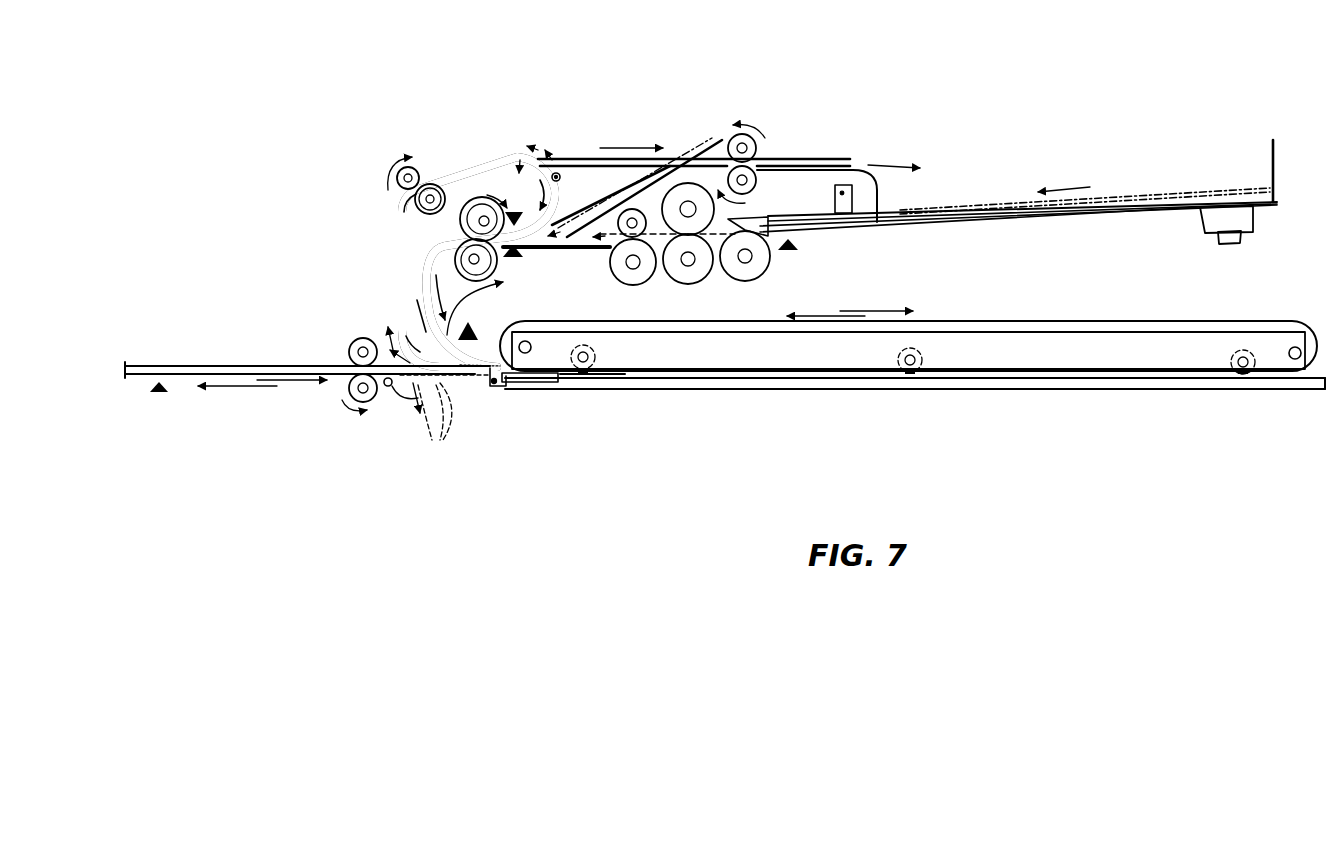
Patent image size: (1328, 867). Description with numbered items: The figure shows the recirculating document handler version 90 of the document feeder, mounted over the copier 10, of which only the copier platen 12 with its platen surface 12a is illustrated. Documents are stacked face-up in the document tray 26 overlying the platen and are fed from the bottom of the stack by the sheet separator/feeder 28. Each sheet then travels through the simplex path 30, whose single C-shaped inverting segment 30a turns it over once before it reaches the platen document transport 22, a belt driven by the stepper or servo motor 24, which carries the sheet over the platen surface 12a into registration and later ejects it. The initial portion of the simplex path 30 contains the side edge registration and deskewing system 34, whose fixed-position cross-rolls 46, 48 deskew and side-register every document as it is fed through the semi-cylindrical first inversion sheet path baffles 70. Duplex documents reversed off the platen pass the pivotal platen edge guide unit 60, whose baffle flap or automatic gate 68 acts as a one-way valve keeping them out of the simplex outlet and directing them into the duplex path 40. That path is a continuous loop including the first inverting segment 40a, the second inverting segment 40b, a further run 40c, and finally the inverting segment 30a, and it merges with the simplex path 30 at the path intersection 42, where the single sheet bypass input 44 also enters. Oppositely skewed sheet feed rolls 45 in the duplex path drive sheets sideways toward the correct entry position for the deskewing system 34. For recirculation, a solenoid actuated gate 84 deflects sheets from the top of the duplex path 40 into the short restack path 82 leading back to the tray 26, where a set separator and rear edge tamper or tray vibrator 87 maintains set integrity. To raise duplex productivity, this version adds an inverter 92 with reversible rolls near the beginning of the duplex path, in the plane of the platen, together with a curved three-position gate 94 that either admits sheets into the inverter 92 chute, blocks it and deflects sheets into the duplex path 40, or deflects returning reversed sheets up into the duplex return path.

The copier 10 is at (1050, 455).
The copier platen 12 is at (710, 384).
The platen surface 12a is at (623, 379).
The platen document transport 22 is at (755, 298).
The stepper or servo motor 24 is at (1293, 359).
The document tray 26 is at (1015, 222).
The sheet separator/feeder 28 is at (735, 213).
The simplex path 30 is at (423, 296).
The inverting segment 30a is at (400, 332).
The side edge registration and deskewing system 34 is at (400, 208).
The duplex path 40 is at (398, 260).
The first inverting segment 40a is at (447, 233).
The second inverting segment 40b is at (572, 172).
The belt curved run 40c is at (425, 318).
The path intersection 42 is at (533, 243).
The single sheet bypass input 44 is at (712, 140).
The sheet feed rolls 45 is at (435, 163).
The cross-roll 46 is at (482, 212).
The cross-roll 48 is at (492, 262).
The pivotal platen edge guide unit 60 is at (522, 383).
The baffle flap or automatic gate 68 is at (492, 378).
The first inversion sheet path baffles 70 is at (440, 274).
The restack path 82 is at (628, 158).
The solenoid actuated gate 84 is at (562, 173).
The set separator and rear edge tamper and/or tray vibrator 87 is at (1225, 236).
The RDH version 90 is at (905, 82).
The inverter 92 is at (230, 347).
The gate 94 is at (437, 399).